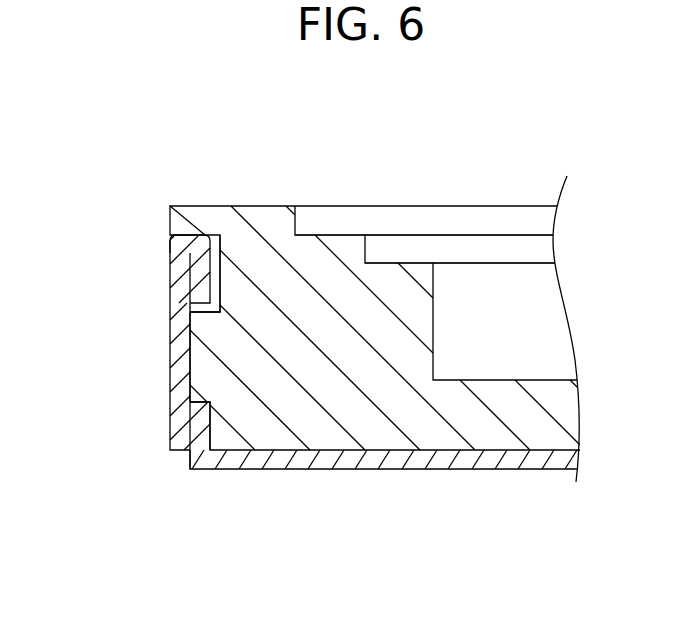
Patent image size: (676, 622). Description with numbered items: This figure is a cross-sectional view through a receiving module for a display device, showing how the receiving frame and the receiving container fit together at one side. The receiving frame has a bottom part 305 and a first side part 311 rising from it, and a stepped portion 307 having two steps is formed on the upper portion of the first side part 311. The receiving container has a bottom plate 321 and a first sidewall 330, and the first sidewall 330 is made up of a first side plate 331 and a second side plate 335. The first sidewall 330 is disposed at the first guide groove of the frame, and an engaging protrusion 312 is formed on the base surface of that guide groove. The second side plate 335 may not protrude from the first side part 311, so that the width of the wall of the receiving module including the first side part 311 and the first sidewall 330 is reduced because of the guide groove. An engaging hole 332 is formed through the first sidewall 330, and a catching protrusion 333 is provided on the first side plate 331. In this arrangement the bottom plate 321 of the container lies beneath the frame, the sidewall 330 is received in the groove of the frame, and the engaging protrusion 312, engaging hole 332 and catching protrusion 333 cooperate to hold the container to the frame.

The bottom part 305 is at (517, 423).
The stepped portion 307 is at (395, 263).
The first side part 311 is at (307, 313).
The engaging protrusion 312 is at (200, 342).
The bottom plate 321 is at (428, 460).
The first sidewall 330 is at (114, 352).
The first side plate 331 is at (200, 430).
The engaging hole 332 is at (205, 305).
The catching protrusion 333 is at (213, 302).
The second side plate 335 is at (180, 378).